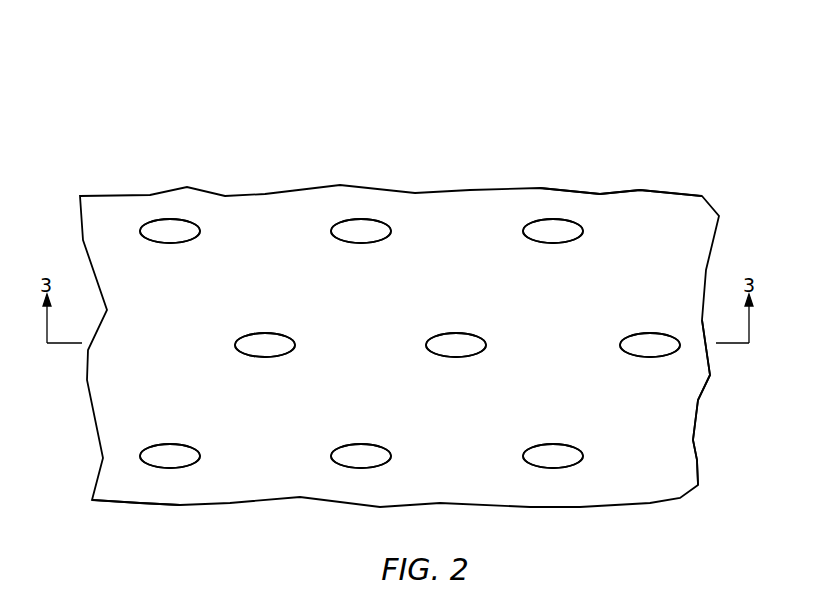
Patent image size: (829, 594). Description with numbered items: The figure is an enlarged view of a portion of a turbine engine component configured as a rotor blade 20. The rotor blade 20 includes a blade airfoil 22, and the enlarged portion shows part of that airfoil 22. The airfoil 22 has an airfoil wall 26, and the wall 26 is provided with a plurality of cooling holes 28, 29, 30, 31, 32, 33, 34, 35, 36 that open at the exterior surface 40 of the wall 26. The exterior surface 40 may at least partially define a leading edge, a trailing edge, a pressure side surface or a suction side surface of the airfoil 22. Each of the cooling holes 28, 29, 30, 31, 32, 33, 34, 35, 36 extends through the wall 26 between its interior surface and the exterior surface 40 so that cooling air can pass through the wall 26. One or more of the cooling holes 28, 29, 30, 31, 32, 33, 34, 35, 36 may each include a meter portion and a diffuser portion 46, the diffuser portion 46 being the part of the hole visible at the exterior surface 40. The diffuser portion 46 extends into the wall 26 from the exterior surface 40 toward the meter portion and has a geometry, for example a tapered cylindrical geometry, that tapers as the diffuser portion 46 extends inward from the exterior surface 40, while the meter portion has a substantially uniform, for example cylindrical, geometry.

The rotor blade 20 is at (110, 153).
The blade airfoil 22 is at (652, 188).
The airfoil wall 26 is at (700, 461).
The cooling hole 28 is at (287, 357).
The cooling hole 29 is at (460, 357).
The cooling hole 30 is at (640, 357).
The cooling hole 31 is at (192, 243).
The cooling hole 32 is at (383, 243).
The cooling hole 33 is at (575, 243).
The cooling hole 34 is at (172, 445).
The cooling hole 35 is at (363, 445).
The cooling hole 36 is at (555, 445).
The exterior surface 40 is at (120, 480).
The diffuser portion 46 is at (175, 228).